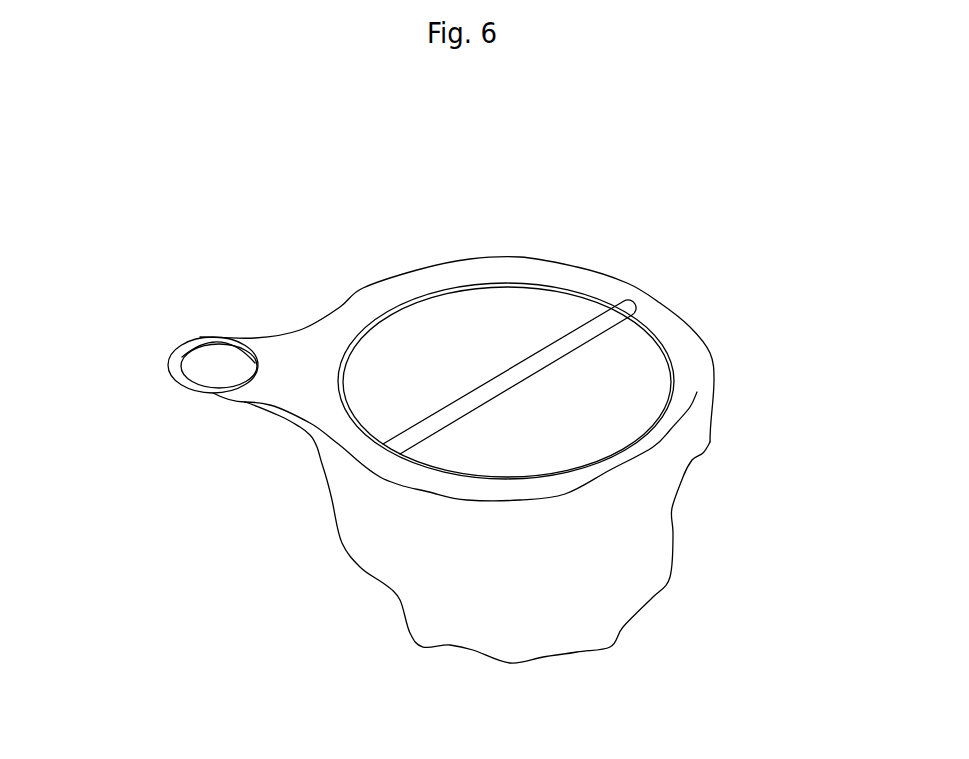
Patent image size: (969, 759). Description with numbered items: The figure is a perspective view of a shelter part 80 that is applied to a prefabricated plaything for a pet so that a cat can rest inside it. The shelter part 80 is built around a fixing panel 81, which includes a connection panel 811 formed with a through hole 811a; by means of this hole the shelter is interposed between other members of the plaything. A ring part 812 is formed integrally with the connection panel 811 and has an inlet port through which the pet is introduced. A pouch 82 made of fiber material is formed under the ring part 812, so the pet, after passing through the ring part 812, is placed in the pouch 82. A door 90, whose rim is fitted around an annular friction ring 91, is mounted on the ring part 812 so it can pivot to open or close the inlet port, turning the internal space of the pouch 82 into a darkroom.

The shelter part 80 is at (538, 162).
The fixing panel 81 is at (378, 283).
The pouch 82 is at (638, 553).
The door 90 is at (643, 358).
The annular friction ring 91 is at (697, 392).
The connection panel 811 is at (207, 372).
The through hole 811a is at (200, 353).
The ring part 812 is at (188, 398).